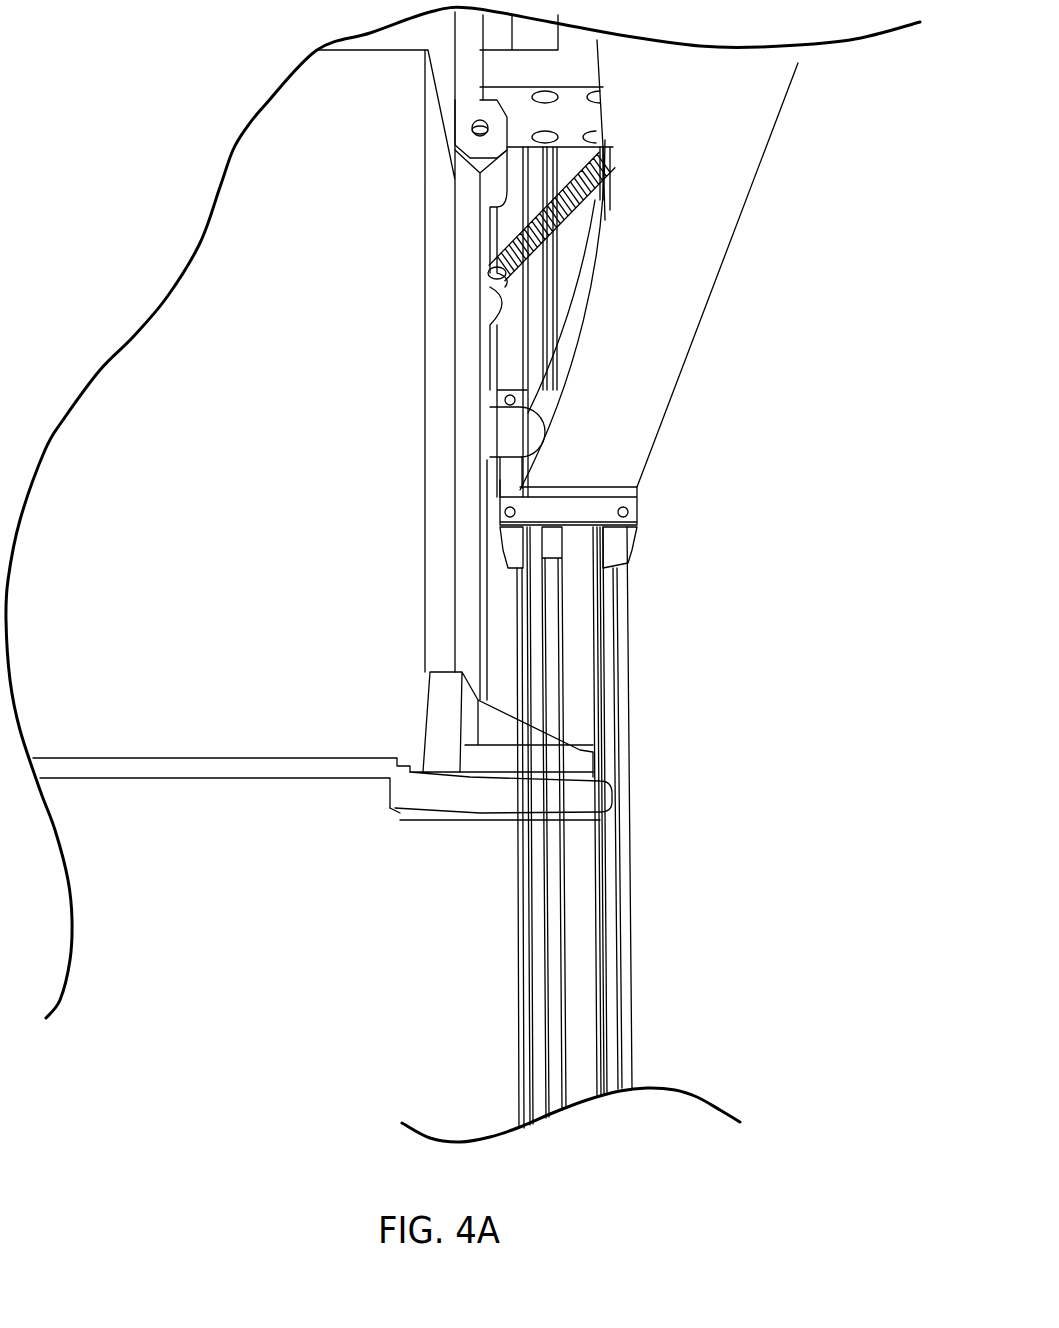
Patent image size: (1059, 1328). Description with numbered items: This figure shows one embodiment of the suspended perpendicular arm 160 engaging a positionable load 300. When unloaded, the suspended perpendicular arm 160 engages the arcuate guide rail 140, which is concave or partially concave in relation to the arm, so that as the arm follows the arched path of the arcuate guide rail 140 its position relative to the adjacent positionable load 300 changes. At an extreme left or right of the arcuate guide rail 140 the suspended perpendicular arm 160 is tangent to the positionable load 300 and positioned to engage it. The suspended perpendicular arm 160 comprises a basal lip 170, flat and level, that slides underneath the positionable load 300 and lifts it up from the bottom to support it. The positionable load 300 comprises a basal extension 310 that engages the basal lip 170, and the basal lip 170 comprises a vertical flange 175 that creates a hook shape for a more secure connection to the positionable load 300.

The positionable load 300 is at (288, 537).
The arcuate guide rail 140 is at (712, 169).
The basal extension 310 is at (416, 767).
The vertical flange 175 is at (405, 767).
The basal lip 170 is at (405, 794).
The suspended perpendicular arm 160 is at (457, 856).